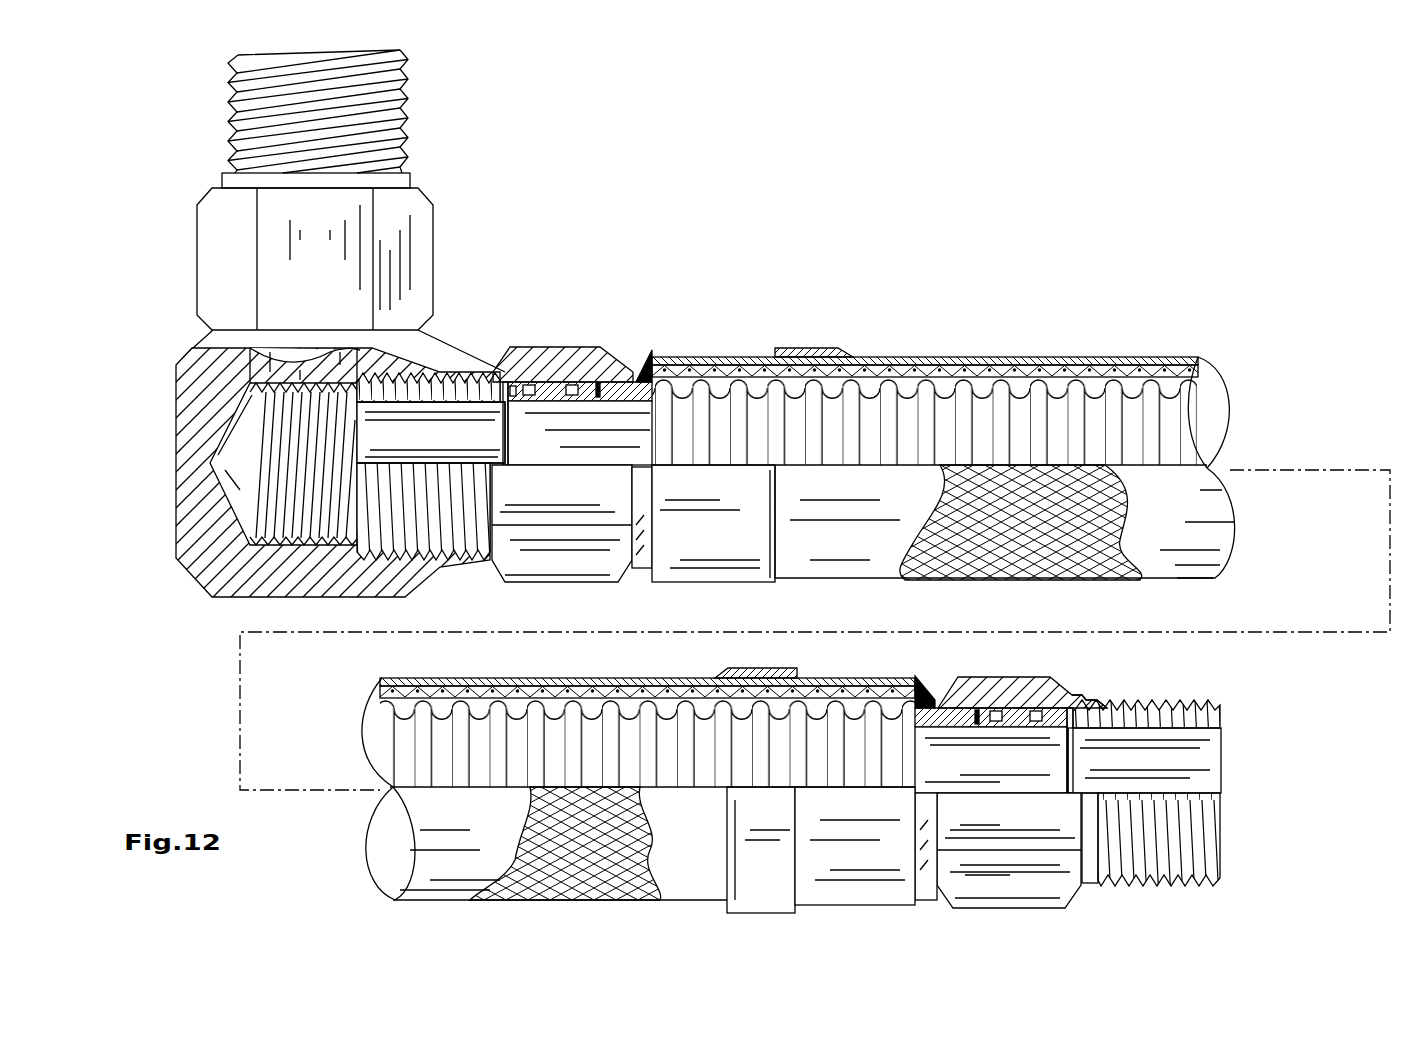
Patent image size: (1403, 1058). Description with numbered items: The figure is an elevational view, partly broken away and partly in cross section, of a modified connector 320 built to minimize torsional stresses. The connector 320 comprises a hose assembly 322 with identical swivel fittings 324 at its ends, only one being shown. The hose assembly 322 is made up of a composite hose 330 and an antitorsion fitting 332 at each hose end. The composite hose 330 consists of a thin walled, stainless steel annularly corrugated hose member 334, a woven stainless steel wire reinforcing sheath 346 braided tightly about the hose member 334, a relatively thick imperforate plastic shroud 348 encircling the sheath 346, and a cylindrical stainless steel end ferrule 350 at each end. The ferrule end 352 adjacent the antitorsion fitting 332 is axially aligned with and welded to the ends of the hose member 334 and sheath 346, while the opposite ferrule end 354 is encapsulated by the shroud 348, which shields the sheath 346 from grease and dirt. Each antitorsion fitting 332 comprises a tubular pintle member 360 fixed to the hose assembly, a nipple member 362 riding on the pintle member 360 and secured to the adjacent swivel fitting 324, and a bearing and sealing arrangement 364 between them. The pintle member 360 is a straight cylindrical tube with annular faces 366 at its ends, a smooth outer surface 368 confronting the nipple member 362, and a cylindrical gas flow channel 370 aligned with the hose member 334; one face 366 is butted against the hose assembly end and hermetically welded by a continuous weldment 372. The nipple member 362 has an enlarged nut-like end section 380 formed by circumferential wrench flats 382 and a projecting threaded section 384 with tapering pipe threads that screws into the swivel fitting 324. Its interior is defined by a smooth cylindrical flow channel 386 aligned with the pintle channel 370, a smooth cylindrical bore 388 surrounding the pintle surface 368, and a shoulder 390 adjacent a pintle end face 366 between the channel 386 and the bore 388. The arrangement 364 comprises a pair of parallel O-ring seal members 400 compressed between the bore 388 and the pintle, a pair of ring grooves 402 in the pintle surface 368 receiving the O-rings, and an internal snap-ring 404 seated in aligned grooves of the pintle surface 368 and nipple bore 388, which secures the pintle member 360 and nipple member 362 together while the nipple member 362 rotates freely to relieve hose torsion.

The modified connector 320 is at (1000, 262).
The hose assembly 322 is at (1127, 352).
The swivel fitting 324 is at (440, 234).
The composite hose 330 is at (1212, 406).
The antitorsion fitting 332 is at (592, 330).
The corrugated hose member 334 is at (1172, 448).
The wire reinforcing sheath 346 is at (1020, 550).
The plastic shroud 348 is at (848, 356).
The end ferrule 350 is at (736, 364).
The ferrule end 352 is at (647, 356).
The ferrule end 354 is at (722, 678).
The pintle member 360 is at (496, 443).
The nipple member 362 is at (492, 572).
The bearing and sealing arrangement 364 is at (557, 405).
The annular face 366 is at (494, 455).
The smooth outer surface 368 is at (538, 385).
The gas flow channel 370 is at (584, 432).
The weldment 372 is at (637, 570).
The nut-like end section 380 is at (527, 545).
The wrench flats 382 is at (975, 875).
The threaded section 384 is at (405, 383).
The flow channel 386 is at (360, 447).
The cylindrical bore 388 is at (1086, 692).
The shoulder 390 is at (500, 418).
The O-ring seal members 400 is at (570, 383).
The ring grooves 402 is at (500, 382).
The internal snap-ring 404 is at (604, 388).